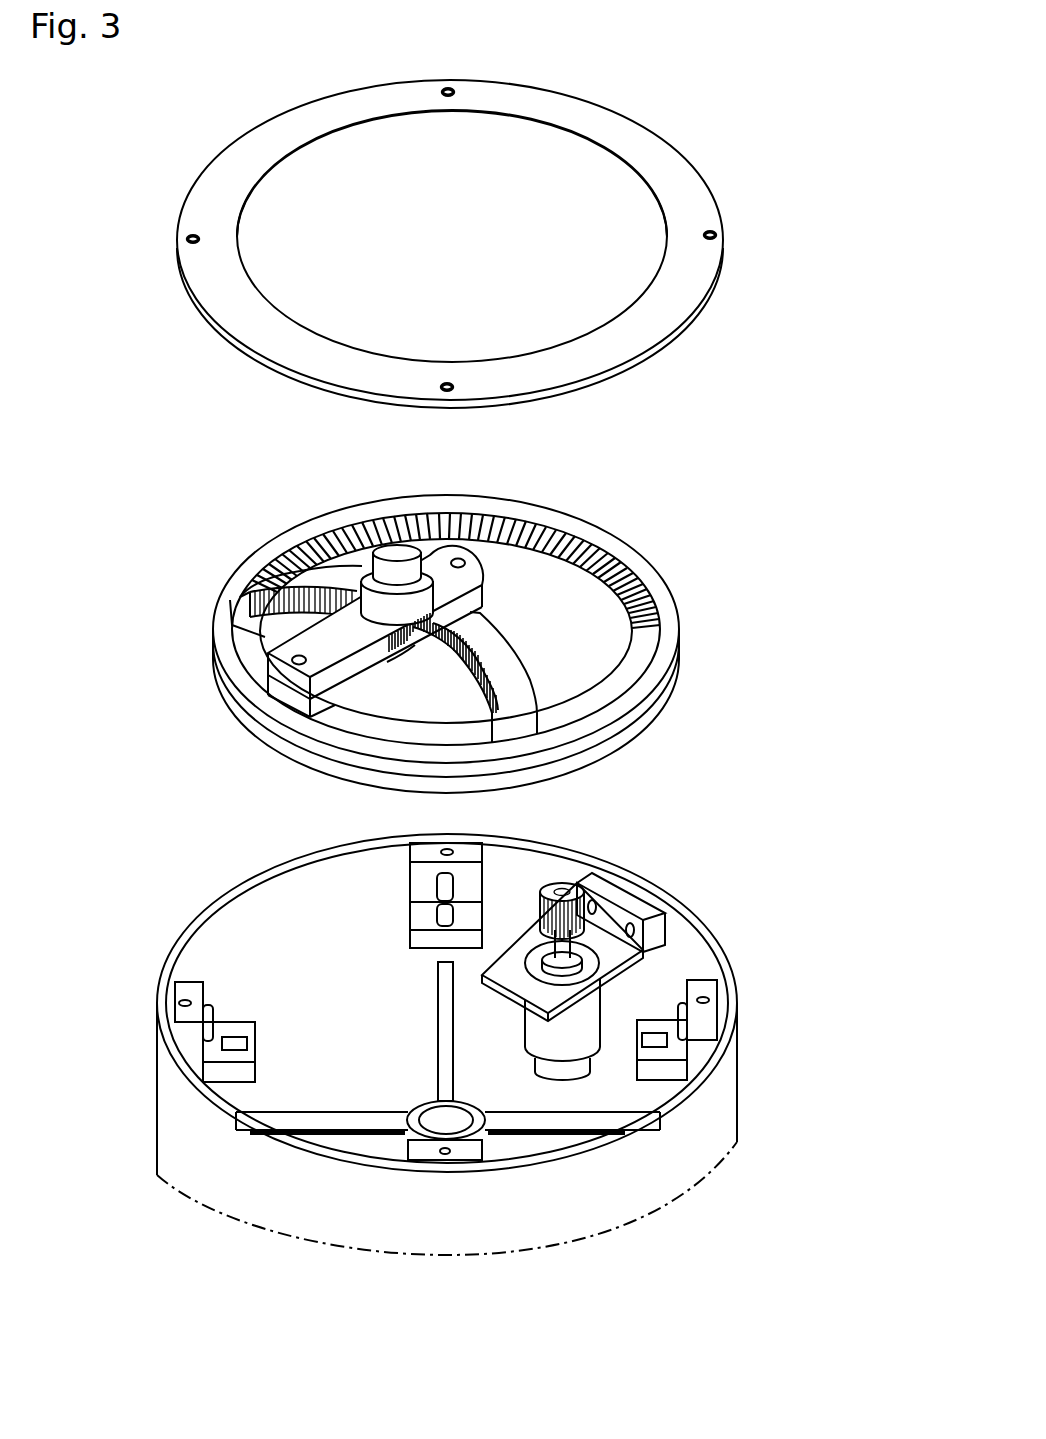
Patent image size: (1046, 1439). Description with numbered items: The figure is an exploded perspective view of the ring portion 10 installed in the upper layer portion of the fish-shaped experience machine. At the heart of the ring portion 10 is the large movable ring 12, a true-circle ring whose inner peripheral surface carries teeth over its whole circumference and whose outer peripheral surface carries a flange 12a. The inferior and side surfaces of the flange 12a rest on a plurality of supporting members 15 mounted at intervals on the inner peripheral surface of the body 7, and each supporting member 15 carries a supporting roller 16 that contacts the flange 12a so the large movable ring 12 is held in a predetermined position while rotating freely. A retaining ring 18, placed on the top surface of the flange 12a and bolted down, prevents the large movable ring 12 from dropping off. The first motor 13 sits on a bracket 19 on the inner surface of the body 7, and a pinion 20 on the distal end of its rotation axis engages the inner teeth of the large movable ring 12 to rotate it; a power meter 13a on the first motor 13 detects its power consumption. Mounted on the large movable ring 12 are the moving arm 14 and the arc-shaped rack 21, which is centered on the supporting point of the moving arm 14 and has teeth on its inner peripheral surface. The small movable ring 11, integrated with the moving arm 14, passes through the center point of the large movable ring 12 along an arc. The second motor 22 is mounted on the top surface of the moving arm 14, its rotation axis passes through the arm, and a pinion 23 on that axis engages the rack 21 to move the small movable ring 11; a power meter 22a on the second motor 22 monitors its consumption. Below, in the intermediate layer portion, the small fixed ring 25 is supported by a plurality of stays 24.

The body 7 is at (737, 1010).
The ring portion 10 is at (610, 497).
The small movable ring 11 is at (452, 523).
The large movable ring 12 is at (657, 575).
The flange 12a is at (680, 648).
The first motor 13 is at (567, 1052).
The power meter 13a is at (565, 1060).
The moving arm 14 is at (320, 639).
The supporting member 15 is at (410, 875).
The supporting roller 16 is at (440, 900).
The retaining ring 18 is at (712, 206).
The bracket 19 is at (622, 925).
The pinion 20 is at (565, 880).
The rack 21 is at (262, 577).
The second motor 22 is at (340, 548).
The power meter 22a is at (397, 556).
The pinion 23 is at (414, 656).
The stay 24 is at (437, 1010).
The small fixed ring 25 is at (420, 1100).